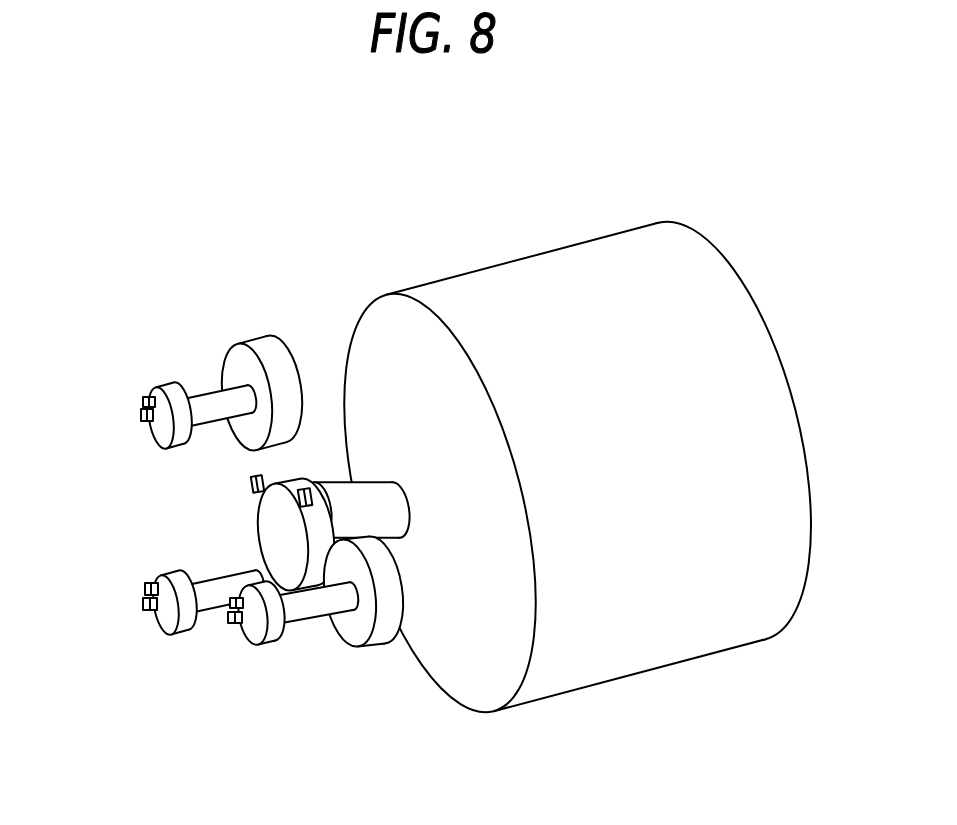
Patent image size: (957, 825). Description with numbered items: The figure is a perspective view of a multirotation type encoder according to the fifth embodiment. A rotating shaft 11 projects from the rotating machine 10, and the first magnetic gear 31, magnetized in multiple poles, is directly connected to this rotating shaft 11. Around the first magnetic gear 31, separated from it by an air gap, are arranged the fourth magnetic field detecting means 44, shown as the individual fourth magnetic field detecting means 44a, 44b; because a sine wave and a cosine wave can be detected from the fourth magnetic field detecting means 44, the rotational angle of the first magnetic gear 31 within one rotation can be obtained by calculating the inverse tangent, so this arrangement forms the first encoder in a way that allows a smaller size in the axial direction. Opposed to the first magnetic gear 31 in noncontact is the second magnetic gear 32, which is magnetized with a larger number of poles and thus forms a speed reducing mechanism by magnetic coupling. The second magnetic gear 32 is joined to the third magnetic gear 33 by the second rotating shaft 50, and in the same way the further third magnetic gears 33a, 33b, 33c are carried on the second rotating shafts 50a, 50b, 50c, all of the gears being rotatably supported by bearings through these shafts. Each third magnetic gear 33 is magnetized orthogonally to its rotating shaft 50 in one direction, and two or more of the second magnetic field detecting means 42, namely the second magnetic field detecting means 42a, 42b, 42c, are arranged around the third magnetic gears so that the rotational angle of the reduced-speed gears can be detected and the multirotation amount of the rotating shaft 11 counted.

The rotating machine 10 is at (738, 337).
The rotating shaft 11 is at (383, 522).
The first magnetic gear 31 is at (263, 498).
The second magnetic gear 32 is at (263, 323).
The third magnetic gear 33 is at (166, 363).
The third magnetic gear 33a is at (167, 387).
The third magnetic gear 33b is at (266, 648).
The third magnetic gear 33c is at (169, 572).
The second magnetic field detecting means 42 is at (104, 382).
The second magnetic field detecting means 42a is at (142, 418).
The second magnetic field detecting means 42b is at (236, 624).
The second magnetic field detecting means 42c is at (152, 612).
The fourth magnetic field detecting means 44 is at (371, 338).
The fourth magnetic field detecting means 44a is at (258, 477).
The fourth magnetic field detecting means 44b is at (306, 489).
The second rotating shaft 50 is at (215, 408).
The second rotating shaft 50a is at (218, 410).
The second rotating shaft 50b is at (316, 614).
The second rotating shaft 50c is at (222, 591).